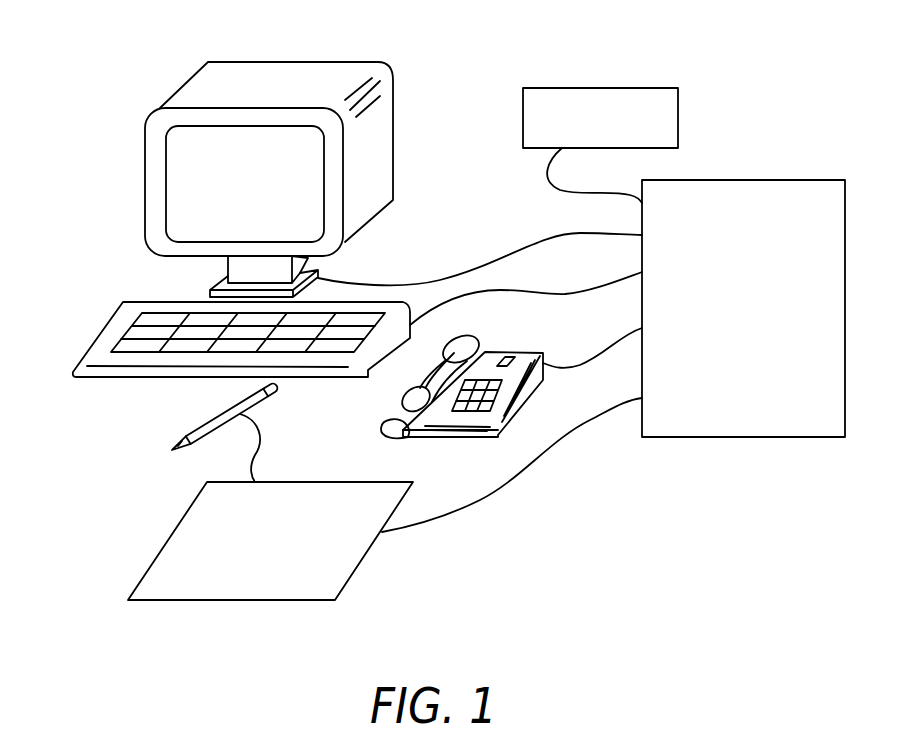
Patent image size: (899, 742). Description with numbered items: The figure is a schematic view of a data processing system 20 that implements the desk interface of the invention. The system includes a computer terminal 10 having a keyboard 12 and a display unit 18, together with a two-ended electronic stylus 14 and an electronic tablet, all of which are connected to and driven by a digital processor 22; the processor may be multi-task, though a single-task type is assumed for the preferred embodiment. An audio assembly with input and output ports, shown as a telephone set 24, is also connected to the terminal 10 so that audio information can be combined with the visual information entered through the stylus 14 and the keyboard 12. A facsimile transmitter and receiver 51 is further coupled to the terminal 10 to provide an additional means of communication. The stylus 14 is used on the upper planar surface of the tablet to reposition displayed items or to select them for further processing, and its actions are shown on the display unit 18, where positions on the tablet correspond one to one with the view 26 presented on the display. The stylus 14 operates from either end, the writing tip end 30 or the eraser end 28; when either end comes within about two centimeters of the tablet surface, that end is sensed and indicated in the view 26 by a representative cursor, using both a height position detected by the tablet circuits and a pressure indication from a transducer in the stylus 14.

The computer terminal 10 is at (127, 236).
The keyboard 12 is at (114, 312).
The two-ended electronic stylus 14 is at (210, 408).
The display unit 18 is at (395, 85).
The data processing system 20 is at (588, 472).
The digital processor 22 is at (768, 180).
The telephone set 24 is at (517, 350).
The view 26 is at (272, 191).
The eraser end 28 is at (274, 396).
The writing tip end 30 is at (172, 455).
The facsimile transmitter and receiver 51 is at (633, 86).